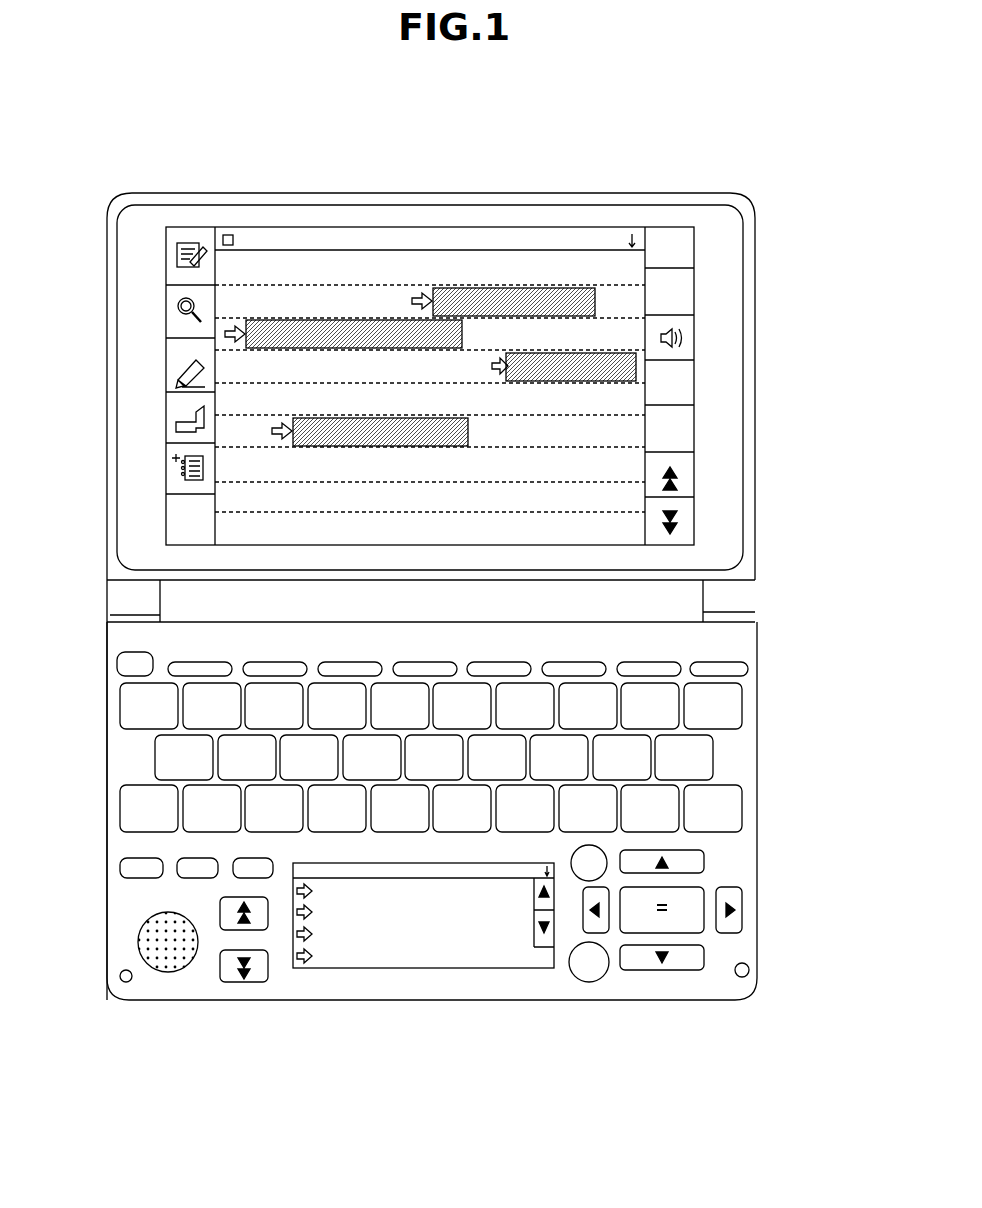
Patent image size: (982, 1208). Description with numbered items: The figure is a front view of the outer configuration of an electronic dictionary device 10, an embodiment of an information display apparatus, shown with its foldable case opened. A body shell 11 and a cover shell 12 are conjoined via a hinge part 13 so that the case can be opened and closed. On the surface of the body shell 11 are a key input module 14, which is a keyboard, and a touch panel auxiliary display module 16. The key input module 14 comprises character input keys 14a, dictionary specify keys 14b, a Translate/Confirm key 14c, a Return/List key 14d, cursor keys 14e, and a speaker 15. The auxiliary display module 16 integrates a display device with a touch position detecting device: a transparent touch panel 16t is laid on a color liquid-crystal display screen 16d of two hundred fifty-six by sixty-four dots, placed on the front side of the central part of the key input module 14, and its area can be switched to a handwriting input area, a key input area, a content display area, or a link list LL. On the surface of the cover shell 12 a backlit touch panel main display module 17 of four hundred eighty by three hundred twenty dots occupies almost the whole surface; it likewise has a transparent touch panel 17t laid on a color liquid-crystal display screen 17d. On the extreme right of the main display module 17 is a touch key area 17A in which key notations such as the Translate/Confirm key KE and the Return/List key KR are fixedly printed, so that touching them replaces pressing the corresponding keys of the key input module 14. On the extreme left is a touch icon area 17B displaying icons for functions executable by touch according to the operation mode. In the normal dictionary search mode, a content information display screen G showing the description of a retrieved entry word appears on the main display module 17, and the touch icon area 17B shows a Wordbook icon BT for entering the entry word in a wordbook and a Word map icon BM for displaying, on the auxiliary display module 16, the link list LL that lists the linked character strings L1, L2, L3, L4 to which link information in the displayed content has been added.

The electronic dictionary device 10 is at (722, 116).
The body shell 11 is at (110, 780).
The cover shell 12 is at (117, 386).
The hinge part 13 is at (125, 596).
The key input module 14 is at (795, 618).
The character input keys 14a is at (757, 680).
The dictionary specify keys 14b is at (757, 618).
The Translate/Confirm key 14c is at (700, 893).
The Return/List key 14d is at (600, 946).
The cursor keys 14e is at (745, 908).
The speaker 15 is at (168, 962).
The touch panel auxiliary display module 16 is at (507, 1062).
The color liquid-crystal display screen 16d is at (447, 973).
The transparent touch panel 16t is at (450, 960).
The touch panel main display module 17 is at (523, 148).
The color liquid-crystal display screen 17d is at (497, 237).
The transparent touch panel 17t is at (522, 240).
The touch key area 17A is at (674, 226).
The touch icon area 17B is at (190, 226).
The content information display screen G is at (615, 258).
The linked character string L1 is at (535, 294).
The linked character string L2 is at (250, 323).
The linked character string L3 is at (637, 356).
The linked character string L4 is at (300, 428).
The link list LL is at (503, 958).
The Return/List key KR is at (690, 388).
The Translate/Confirm key KE is at (690, 428).
The Wordbook icon BT is at (197, 468).
The Word map icon BM is at (197, 528).